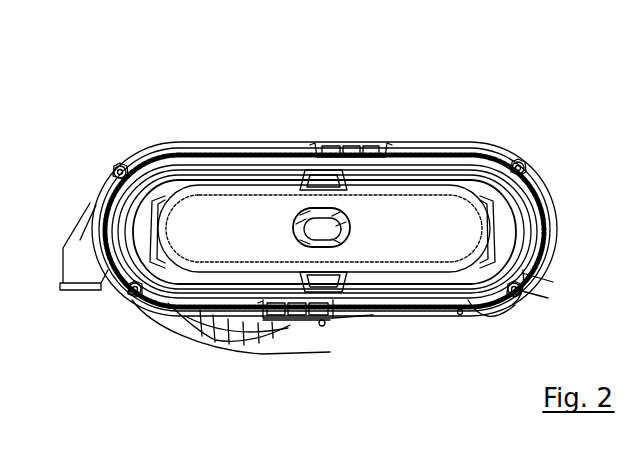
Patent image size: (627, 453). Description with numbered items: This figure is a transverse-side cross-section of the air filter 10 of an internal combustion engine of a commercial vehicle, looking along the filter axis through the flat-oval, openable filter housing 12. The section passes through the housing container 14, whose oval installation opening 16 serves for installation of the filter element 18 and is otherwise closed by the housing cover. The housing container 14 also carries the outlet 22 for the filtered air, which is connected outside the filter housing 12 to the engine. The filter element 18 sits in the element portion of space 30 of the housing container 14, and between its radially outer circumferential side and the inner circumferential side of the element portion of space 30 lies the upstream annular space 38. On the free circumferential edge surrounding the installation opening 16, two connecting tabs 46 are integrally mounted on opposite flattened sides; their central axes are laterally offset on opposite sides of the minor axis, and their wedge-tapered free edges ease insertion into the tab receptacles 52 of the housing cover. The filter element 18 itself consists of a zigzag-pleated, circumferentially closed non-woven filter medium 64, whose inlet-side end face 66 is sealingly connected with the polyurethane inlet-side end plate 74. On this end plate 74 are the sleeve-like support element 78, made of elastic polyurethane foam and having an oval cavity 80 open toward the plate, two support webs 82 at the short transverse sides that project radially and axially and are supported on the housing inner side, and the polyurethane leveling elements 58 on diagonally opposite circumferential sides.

The air filter 10 is at (588, 92).
The filter housing 12 is at (138, 157).
The housing container 14 is at (215, 141).
The installation opening 16 is at (130, 216).
The filter element 18 is at (105, 229).
The outlet 22 is at (220, 333).
The element portion of space 30 is at (522, 208).
The upstream annular space 38 is at (548, 266).
The connecting tabs 46 is at (362, 143).
The tab receptacles 52 is at (340, 143).
The leveling elements 58 is at (305, 167).
The filter medium 64 is at (447, 313).
The inlet-side end face 66 is at (444, 195).
The inlet-side end plate 74 is at (497, 300).
The support element 78 is at (350, 227).
The cavity 80 is at (345, 240).
The support webs 82 is at (122, 165).